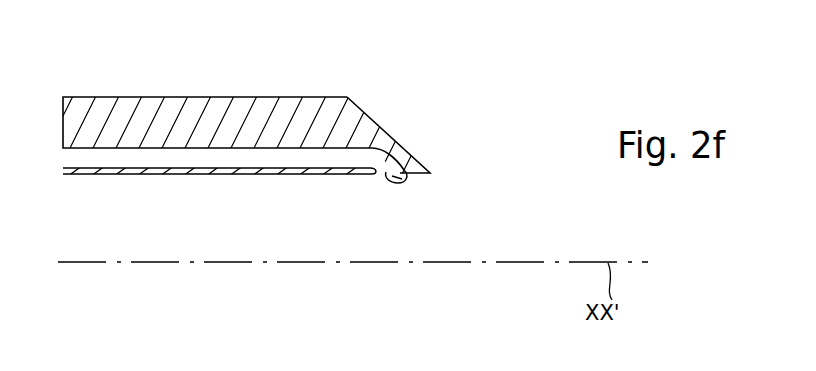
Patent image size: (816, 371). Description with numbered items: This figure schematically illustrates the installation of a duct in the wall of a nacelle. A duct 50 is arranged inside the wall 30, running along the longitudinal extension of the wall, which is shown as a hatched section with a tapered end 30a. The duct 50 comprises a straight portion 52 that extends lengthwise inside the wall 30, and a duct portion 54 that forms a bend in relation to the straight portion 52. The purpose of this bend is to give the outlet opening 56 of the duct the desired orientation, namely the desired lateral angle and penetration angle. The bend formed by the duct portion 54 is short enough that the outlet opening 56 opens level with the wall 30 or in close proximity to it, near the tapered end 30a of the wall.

The wall 30 is at (172, 97).
The tapered end of substrate 30a is at (382, 129).
The duct 50 is at (176, 175).
The straight portion 52 is at (302, 175).
The duct portion 54 is at (374, 176).
The outlet opening 56 is at (396, 186).